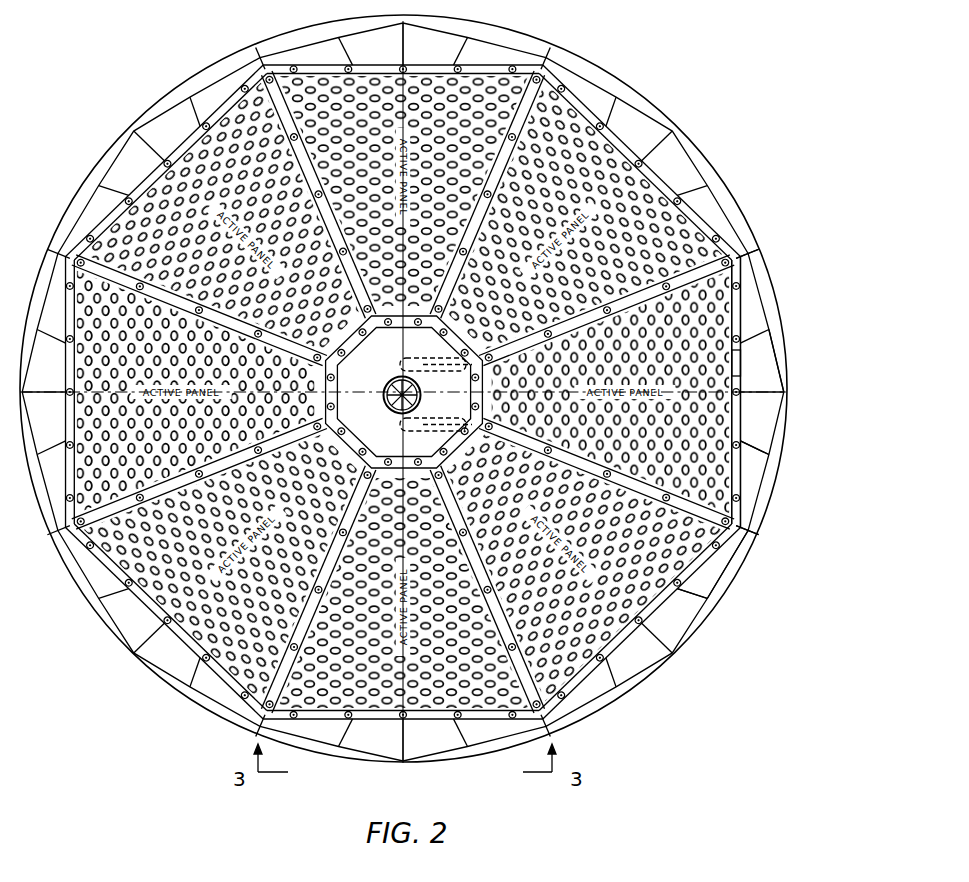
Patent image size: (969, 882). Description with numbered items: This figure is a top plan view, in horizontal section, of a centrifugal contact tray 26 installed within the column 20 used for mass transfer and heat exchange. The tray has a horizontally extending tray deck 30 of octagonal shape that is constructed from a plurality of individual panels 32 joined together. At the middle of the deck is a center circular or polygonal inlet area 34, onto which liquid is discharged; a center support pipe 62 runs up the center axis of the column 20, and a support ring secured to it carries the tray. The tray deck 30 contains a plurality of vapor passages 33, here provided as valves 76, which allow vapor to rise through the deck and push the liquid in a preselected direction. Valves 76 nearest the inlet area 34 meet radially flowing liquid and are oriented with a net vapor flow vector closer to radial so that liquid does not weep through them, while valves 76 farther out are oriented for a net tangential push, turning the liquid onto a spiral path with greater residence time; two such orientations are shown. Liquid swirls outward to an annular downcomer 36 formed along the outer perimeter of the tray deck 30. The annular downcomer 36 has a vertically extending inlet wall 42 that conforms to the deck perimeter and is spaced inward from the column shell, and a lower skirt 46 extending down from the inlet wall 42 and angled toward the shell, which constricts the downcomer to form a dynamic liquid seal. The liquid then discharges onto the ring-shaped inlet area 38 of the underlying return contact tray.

The column 20 is at (599, 69).
The centrifugal contact tray 26 is at (742, 262).
The tray deck 30 is at (735, 300).
The panels 32 is at (747, 528).
The vapor passages 33 is at (718, 576).
The inlet area 34 is at (366, 389).
The annular downcomer 36 is at (763, 412).
The inlet area 38 is at (774, 309).
The inlet wall 42 is at (742, 365).
The skirt 46 is at (774, 375).
The center support pipe 62 is at (421, 390).
The valves 76 is at (693, 590).